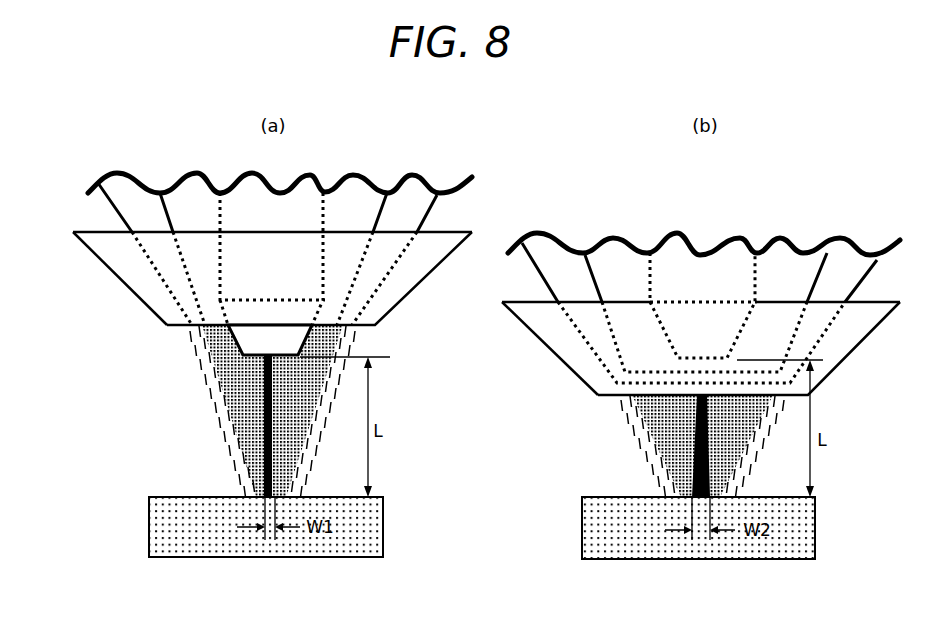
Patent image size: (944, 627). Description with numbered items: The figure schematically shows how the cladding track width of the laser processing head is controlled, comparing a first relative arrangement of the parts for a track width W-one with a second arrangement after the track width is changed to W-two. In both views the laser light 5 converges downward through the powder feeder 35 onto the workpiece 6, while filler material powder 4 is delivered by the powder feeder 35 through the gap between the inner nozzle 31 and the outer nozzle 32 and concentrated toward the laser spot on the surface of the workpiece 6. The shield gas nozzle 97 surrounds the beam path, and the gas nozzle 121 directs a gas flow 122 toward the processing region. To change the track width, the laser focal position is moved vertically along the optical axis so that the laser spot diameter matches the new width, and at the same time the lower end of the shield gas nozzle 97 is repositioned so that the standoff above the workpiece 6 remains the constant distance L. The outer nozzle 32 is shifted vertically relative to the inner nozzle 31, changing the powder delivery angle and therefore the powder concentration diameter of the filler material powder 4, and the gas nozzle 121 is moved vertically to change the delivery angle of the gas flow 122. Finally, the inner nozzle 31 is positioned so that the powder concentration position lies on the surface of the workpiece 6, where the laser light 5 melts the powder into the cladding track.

The filler material powder 4 is at (250, 430).
The laser light 5 is at (266, 377).
The workpiece 6 is at (165, 529).
The inner nozzle 31 is at (187, 210).
The outer nozzle 32 is at (132, 208).
The powder feeder 35 is at (426, 309).
The shield gas nozzle 97 is at (242, 277).
The gas nozzle 121 is at (145, 285).
The gas flow 122 is at (627, 420).